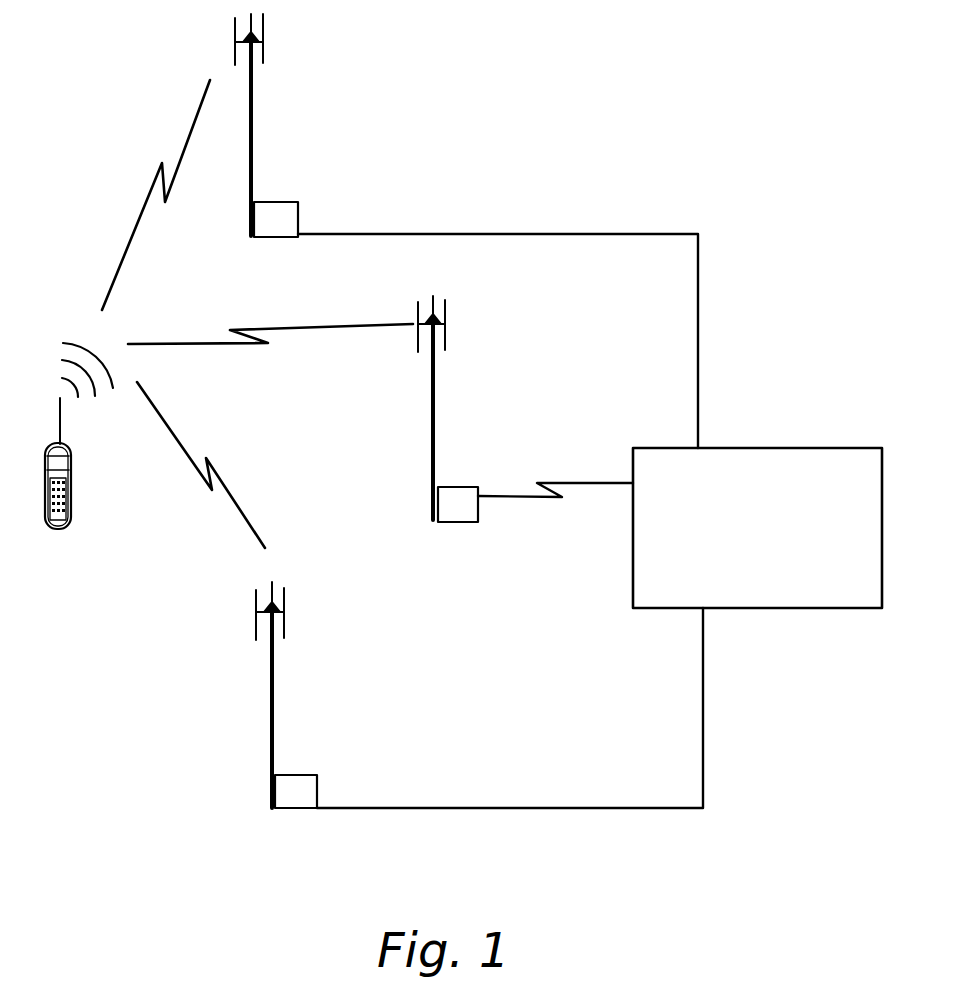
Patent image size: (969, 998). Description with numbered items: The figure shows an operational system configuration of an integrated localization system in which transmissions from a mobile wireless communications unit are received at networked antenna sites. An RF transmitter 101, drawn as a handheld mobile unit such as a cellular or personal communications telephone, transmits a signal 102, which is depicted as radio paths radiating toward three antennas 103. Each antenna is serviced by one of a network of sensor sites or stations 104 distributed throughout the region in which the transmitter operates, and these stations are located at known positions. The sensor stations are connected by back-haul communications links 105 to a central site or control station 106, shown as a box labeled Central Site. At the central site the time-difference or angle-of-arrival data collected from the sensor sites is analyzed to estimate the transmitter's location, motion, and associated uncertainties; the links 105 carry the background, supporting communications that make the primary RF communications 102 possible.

The RF transmitter 101 is at (57, 540).
The signal 102 is at (130, 188).
The antennas 103 is at (297, 35).
The sensor sites or stations 104 is at (308, 213).
The back-haul communications links 105 is at (568, 218).
The central site or control station 106 is at (802, 443).